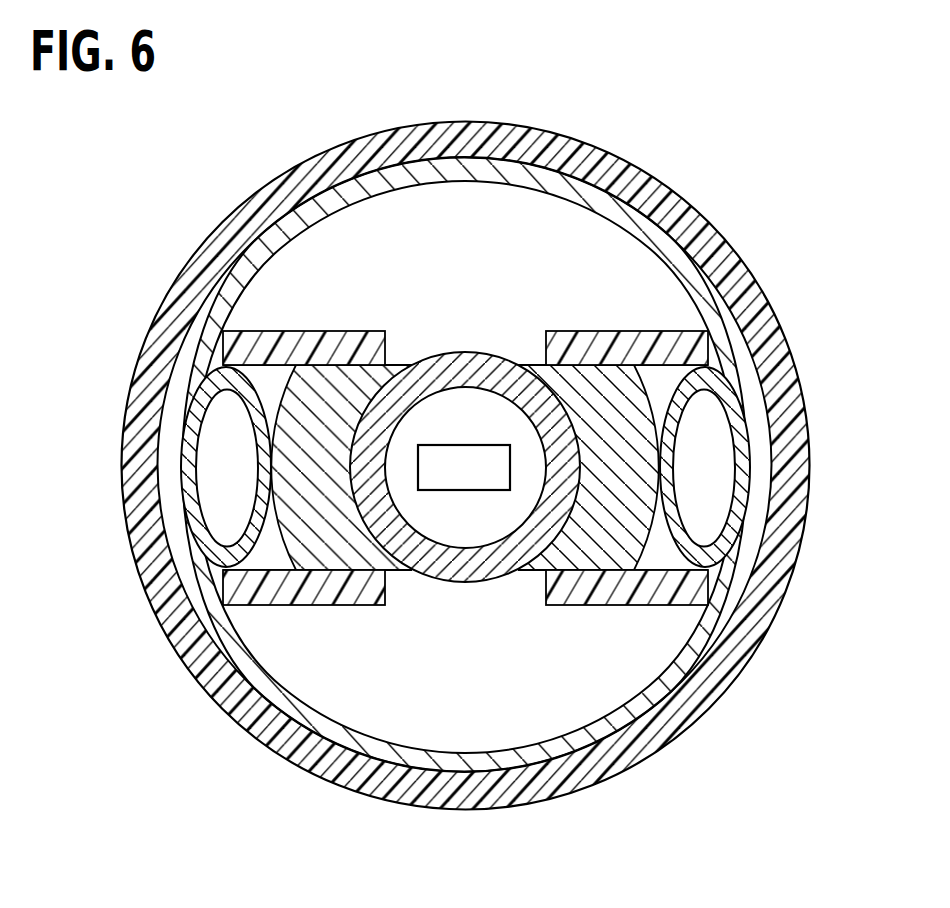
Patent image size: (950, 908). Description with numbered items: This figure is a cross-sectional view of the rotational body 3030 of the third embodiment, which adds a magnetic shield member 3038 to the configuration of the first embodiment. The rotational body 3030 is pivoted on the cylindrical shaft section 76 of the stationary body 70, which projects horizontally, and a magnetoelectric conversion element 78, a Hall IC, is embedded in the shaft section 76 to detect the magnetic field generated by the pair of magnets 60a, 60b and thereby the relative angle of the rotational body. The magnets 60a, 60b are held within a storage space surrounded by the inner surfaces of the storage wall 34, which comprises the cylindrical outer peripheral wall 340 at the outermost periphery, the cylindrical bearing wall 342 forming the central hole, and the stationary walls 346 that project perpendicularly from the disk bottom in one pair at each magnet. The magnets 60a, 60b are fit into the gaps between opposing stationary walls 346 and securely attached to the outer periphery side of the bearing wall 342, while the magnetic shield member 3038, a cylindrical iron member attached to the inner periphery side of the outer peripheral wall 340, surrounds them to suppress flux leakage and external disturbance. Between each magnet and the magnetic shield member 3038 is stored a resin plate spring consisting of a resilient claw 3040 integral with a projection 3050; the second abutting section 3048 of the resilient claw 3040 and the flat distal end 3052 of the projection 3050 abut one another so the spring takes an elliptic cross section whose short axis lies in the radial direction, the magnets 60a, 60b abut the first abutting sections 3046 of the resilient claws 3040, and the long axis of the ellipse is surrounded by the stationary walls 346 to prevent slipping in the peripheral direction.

The rotational body 3030 is at (460, 467).
The storage wall 34 is at (460, 467).
The outer peripheral wall 340 is at (228, 693).
The bearing wall 342 is at (465, 467).
The stationary walls 346 is at (471, 471).
The magnet 60a is at (625, 395).
The magnet 60b is at (318, 525).
The stationary body 70 is at (465, 632).
The shaft section 76 is at (480, 540).
The magnetoelectric conversion element 78 is at (450, 470).
The magnetic shield member 3038 is at (262, 746).
The resilient claw 3040 is at (200, 617).
The first abutting section 3046 is at (267, 470).
The second abutting section 3048 is at (471, 488).
The projection 3050 is at (187, 527).
The distal end 3052 is at (240, 580).